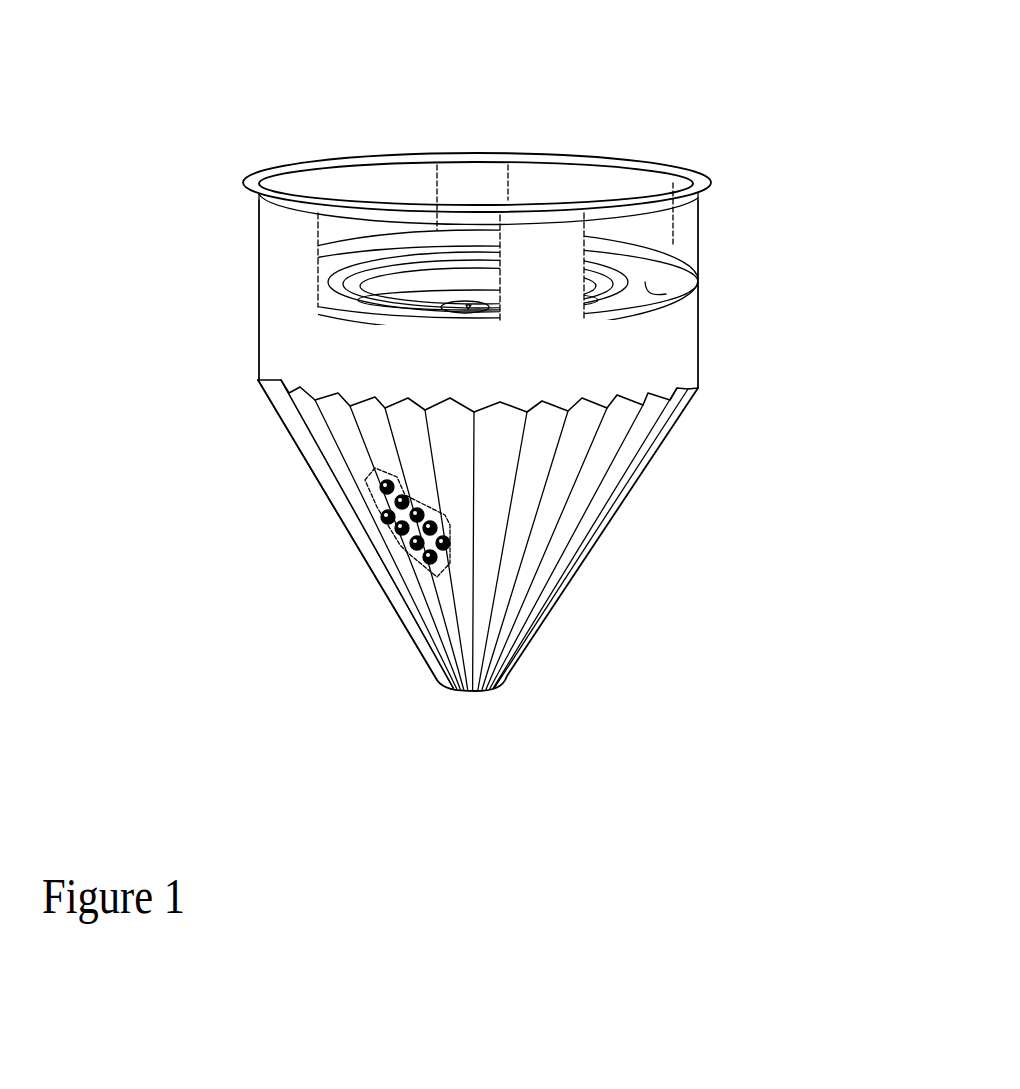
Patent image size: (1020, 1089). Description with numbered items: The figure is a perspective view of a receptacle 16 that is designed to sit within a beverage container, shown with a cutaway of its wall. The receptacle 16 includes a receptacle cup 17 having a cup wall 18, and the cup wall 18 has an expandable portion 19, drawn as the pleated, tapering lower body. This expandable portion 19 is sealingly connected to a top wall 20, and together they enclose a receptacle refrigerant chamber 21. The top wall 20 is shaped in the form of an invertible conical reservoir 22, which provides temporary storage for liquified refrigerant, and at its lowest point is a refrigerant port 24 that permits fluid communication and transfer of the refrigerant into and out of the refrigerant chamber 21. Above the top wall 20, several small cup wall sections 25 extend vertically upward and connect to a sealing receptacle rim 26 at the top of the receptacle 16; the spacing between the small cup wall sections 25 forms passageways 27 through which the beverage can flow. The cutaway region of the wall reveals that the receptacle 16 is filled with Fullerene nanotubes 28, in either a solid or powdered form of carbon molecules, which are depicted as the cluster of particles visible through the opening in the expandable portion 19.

The receptacle 16 is at (748, 125).
The receptacle cup 17 is at (600, 423).
The cup wall 18 is at (302, 357).
The expandable portion 19 is at (352, 502).
The top wall 20 is at (698, 278).
The receptacle refrigerant chamber 21 is at (440, 570).
The invertible conical reservoir 22 is at (437, 297).
The refrigerant port 24 is at (480, 290).
The small cup wall sections 25 is at (468, 178).
The sealing receptacle rim 26 is at (705, 190).
The passageways 27 is at (408, 172).
The Fullerene nanotubes 28 is at (412, 535).